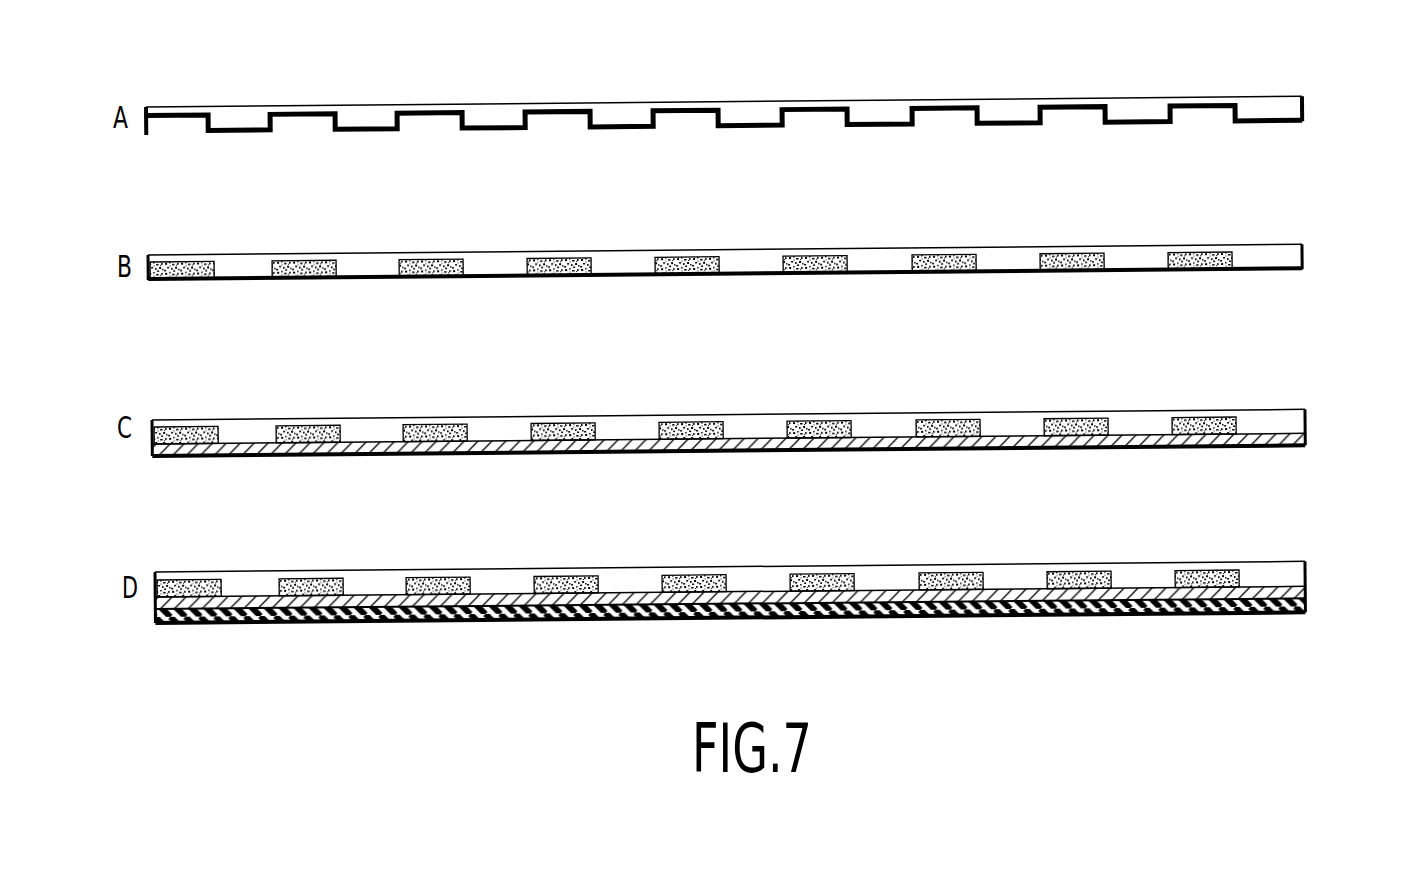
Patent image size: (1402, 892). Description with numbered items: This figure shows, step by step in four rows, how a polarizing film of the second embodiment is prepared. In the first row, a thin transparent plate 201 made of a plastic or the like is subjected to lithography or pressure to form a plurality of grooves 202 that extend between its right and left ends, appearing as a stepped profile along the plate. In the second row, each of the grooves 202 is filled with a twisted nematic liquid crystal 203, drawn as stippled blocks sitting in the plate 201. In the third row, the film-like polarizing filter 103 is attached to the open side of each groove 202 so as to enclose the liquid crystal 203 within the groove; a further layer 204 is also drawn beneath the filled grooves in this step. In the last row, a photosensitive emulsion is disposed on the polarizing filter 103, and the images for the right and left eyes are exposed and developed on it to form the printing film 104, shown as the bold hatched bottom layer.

The thin transparent plate 201 is at (1267, 113).
The grooves 202 is at (180, 127).
The twisted nematic liquid crystal 203 is at (188, 280).
The adhesive layer 204 is at (1013, 437).
The film-like polarizing filter 103 is at (1298, 592).
The printing film 104 is at (1275, 615).